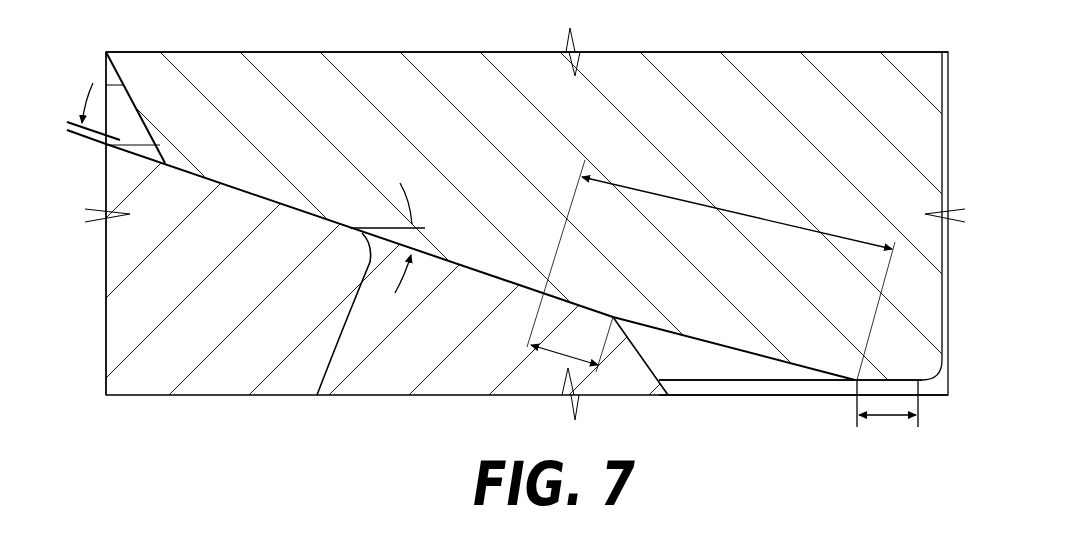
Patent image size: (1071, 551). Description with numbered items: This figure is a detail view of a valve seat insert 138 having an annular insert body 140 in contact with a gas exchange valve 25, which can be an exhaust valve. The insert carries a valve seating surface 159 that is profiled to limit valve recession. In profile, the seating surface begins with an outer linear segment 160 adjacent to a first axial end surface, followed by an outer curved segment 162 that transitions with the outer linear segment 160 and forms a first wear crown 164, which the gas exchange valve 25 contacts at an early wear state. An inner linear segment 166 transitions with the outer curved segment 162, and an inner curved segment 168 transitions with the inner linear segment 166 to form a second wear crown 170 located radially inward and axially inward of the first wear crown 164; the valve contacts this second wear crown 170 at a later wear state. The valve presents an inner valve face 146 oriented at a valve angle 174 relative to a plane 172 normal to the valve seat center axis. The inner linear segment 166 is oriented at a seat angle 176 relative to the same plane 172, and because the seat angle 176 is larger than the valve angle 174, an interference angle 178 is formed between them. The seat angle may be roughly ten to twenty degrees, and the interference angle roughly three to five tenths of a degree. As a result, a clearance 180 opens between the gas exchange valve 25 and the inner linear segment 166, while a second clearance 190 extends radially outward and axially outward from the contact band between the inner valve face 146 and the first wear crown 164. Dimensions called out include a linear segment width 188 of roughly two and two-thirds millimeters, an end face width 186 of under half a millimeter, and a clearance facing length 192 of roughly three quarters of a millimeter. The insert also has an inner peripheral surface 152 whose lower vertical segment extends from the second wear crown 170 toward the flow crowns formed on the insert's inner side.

The gas exchange valve 25 is at (370, 376).
The valve seat insert 138 is at (512, 126).
The annular insert body 140 is at (752, 131).
The inner valve face 146 is at (317, 395).
The inner peripheral surface 152 is at (103, 51).
The valve seating surface 159 is at (483, 265).
The outer linear segment 160 is at (772, 312).
The outer curved segment 162 is at (548, 283).
The first wear crown 164 is at (562, 278).
The inner linear segment 166 is at (430, 253).
The inner curved segment 168 is at (166, 160).
The second wear crown 170 is at (165, 160).
The plane 172 is at (705, 372).
The valve angle 174 is at (748, 385).
The seat angle 176 is at (406, 222).
The interference angle 178 is at (77, 138).
The clearance 180 is at (362, 233).
The end face width 186 is at (887, 418).
The linear segment width 188 is at (742, 217).
The second clearance 190 is at (605, 310).
The clearance facing length 192 is at (557, 352).